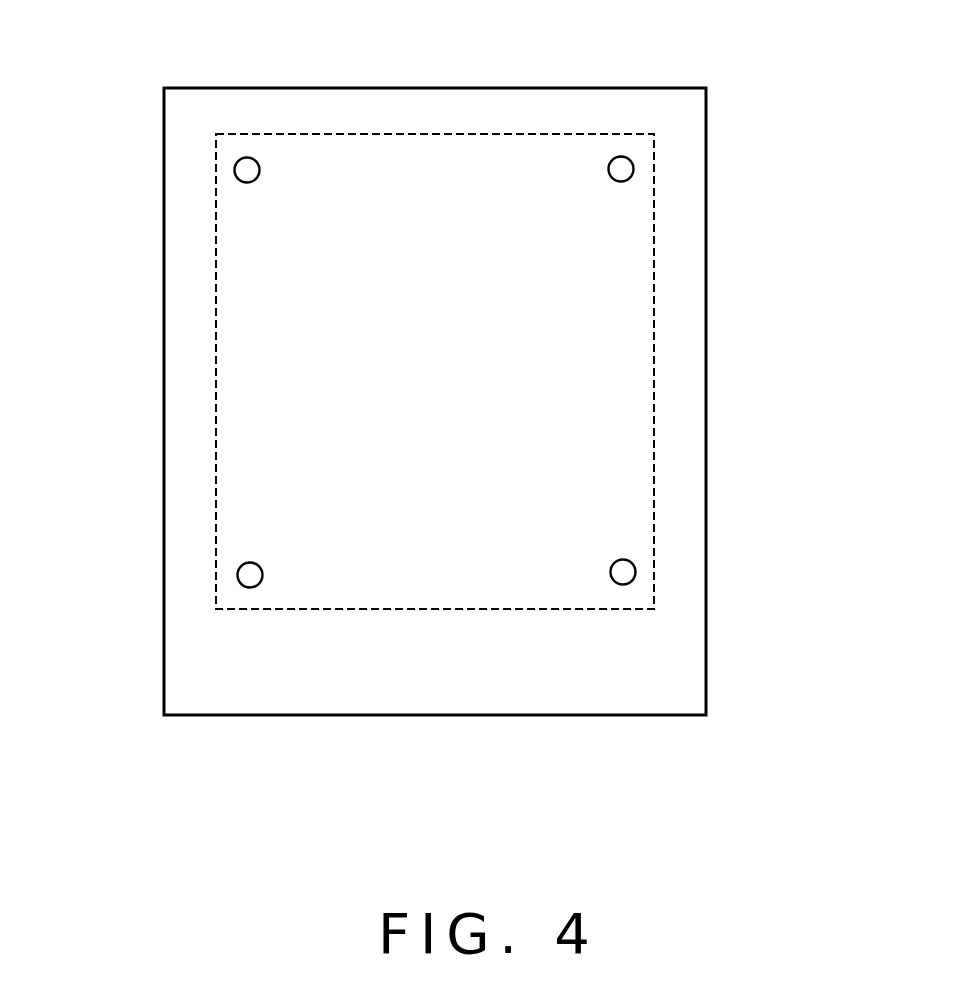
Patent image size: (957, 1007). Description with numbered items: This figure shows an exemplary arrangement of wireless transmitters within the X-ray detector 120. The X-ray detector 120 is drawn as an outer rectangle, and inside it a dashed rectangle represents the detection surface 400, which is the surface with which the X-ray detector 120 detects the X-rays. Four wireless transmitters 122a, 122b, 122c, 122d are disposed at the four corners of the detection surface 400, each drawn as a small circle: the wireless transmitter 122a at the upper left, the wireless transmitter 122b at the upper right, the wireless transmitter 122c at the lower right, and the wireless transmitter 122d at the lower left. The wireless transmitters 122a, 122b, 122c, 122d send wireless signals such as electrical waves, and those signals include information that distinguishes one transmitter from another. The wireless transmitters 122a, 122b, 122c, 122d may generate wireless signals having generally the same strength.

The X-ray detector 120 is at (707, 160).
The detection surface 400 is at (335, 134).
The wireless transmitter 122a is at (234, 170).
The wireless transmitter 122b is at (620, 156).
The wireless transmitter 122c is at (636, 572).
The wireless transmitter 122d is at (237, 574).